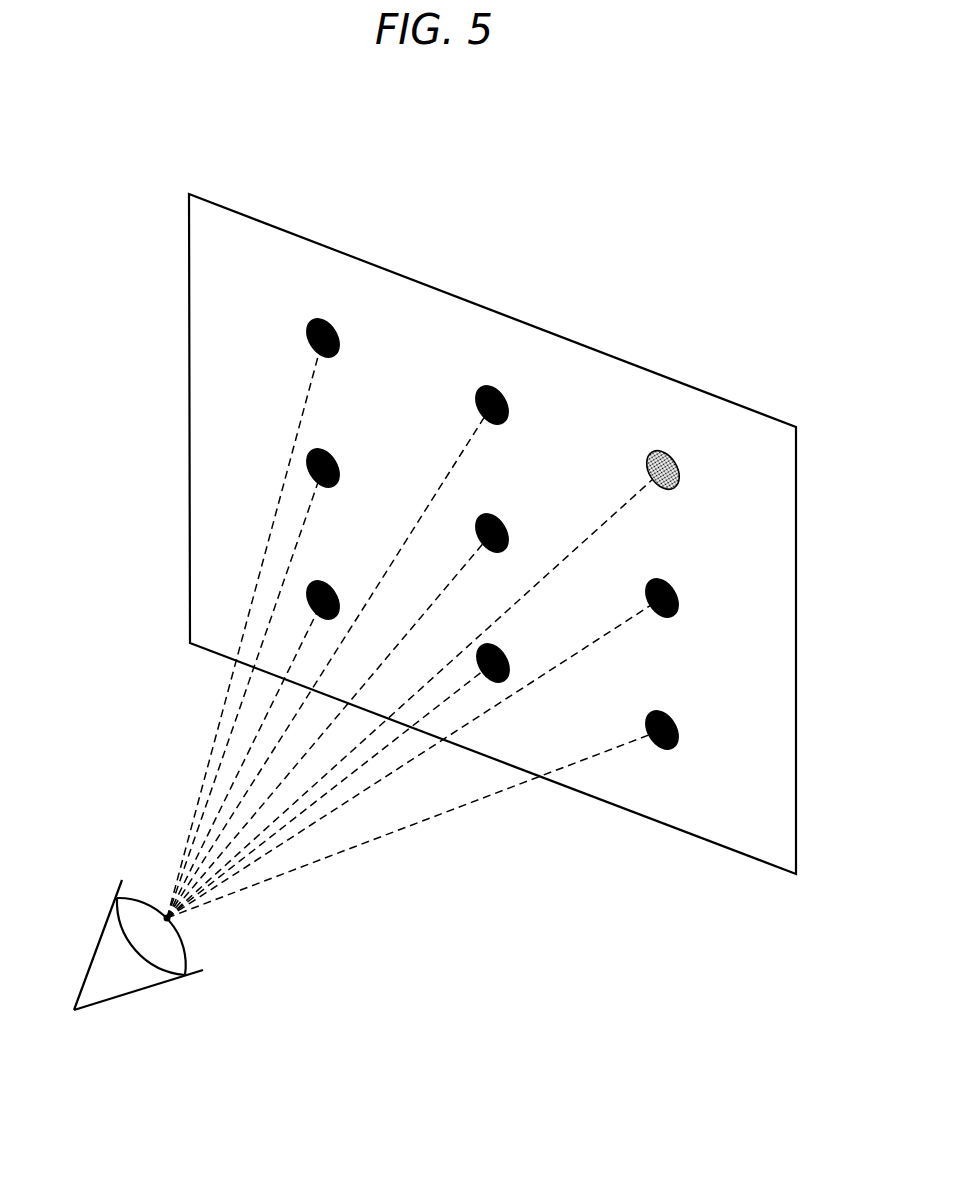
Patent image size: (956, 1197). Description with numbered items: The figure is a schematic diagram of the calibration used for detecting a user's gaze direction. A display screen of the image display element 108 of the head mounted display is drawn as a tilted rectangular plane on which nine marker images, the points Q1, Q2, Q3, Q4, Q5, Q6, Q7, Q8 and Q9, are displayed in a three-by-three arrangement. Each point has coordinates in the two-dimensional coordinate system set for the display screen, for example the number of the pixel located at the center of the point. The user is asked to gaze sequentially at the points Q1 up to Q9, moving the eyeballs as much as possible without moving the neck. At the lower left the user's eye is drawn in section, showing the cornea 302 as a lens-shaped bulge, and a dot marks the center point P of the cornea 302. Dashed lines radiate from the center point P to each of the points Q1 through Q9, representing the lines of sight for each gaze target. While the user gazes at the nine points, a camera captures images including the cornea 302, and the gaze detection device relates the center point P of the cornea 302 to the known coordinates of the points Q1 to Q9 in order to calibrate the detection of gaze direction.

The image display element 108 is at (753, 407).
The cornea 302 is at (137, 910).
The center point of the cornea P is at (184, 928).
The point Q1 is at (336, 330).
The point Q2 is at (505, 397).
The point Q3 is at (676, 462).
The point Q4 is at (336, 460).
The point Q5 is at (505, 525).
The point Q6 is at (675, 590).
The point Q7 is at (336, 592).
The point Q8 is at (506, 655).
The point Q9 is at (675, 722).